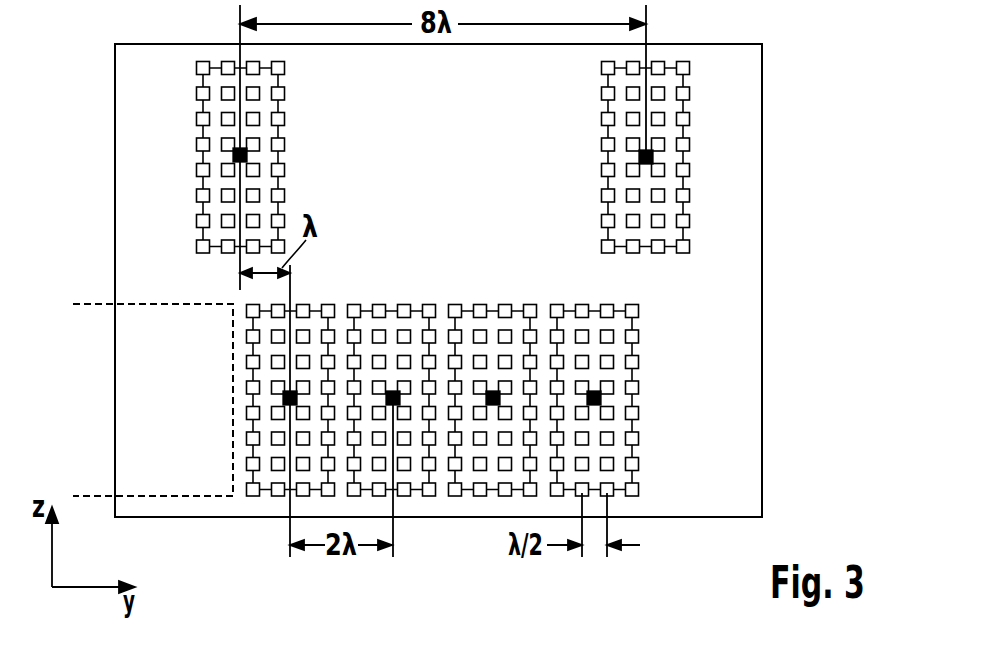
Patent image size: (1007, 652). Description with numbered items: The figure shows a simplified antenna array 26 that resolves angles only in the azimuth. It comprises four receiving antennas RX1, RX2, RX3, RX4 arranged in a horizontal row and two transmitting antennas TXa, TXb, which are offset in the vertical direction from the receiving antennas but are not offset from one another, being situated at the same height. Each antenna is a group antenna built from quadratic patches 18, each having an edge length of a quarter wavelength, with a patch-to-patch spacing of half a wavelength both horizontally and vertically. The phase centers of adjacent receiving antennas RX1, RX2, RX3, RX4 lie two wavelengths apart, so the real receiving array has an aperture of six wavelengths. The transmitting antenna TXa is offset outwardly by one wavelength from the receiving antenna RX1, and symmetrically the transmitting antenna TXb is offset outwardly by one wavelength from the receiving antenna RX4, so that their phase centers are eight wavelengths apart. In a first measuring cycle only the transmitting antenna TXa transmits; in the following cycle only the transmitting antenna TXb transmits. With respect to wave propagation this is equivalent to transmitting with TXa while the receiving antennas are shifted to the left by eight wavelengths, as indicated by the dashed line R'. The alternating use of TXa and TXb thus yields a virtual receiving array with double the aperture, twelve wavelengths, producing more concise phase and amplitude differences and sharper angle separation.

The patches 18 is at (718, 144).
The antenna array 26 is at (145, 211).
The dashed line R' is at (153, 370).
The transmitting antenna TXa is at (283, 130).
The transmitting antenna TXb is at (687, 109).
The receiving antenna RX1 is at (272, 496).
The receiving antenna RX2 is at (395, 304).
The receiving antenna RX3 is at (493, 304).
The receiving antenna RX4 is at (632, 399).